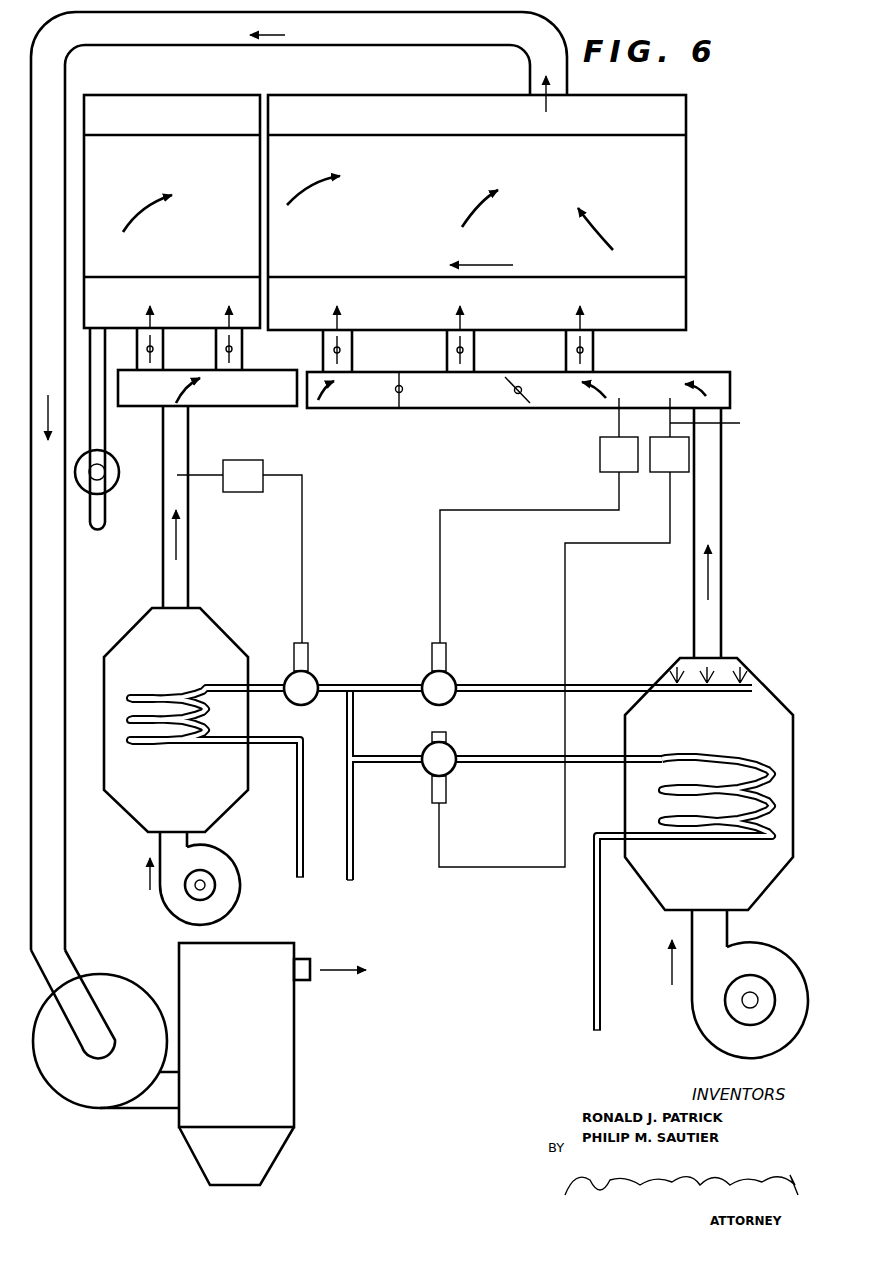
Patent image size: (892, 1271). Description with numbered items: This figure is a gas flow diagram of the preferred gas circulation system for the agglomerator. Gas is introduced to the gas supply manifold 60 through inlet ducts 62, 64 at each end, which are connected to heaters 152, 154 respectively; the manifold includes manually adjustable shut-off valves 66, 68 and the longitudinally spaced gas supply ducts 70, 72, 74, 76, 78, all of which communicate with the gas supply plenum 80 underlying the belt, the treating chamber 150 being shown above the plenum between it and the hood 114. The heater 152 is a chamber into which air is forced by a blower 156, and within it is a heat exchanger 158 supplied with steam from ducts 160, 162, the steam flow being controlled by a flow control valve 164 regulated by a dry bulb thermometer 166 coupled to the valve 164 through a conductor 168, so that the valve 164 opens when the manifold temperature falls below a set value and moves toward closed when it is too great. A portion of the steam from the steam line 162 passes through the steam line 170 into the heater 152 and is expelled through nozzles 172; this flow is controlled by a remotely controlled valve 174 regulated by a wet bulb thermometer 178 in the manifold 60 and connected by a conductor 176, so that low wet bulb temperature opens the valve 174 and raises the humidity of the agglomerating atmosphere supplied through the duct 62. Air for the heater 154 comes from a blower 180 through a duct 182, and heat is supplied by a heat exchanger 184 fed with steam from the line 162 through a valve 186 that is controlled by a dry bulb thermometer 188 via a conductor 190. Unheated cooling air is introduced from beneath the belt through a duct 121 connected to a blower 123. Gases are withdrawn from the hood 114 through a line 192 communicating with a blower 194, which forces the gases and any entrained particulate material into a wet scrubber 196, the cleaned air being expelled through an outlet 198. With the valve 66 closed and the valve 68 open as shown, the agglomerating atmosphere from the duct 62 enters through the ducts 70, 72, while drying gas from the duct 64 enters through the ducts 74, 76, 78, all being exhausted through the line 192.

The gas supply manifold 60 is at (700, 372).
The inlet duct 62 is at (721, 473).
The inlet duct 64 is at (188, 436).
The shut-off valve 66 is at (399, 408).
The shut-off valve 68 is at (522, 404).
The gas supply duct 70 is at (163, 362).
The gas supply duct 72 is at (242, 352).
The gas supply duct 74 is at (352, 348).
The gas supply duct 76 is at (474, 353).
The gas supply duct 78 is at (593, 352).
The gas supply plenum 80 is at (686, 316).
The hood 114 is at (686, 120).
The duct 121 is at (140, 423).
The blower 123 is at (105, 483).
The treating chamber 150 is at (686, 197).
The heater 152 is at (666, 673).
The heater 154 is at (130, 628).
The blower 156 is at (692, 1018).
The heat exchanger 158 is at (675, 842).
The steam duct 160 is at (523, 763).
The steam line 162 is at (354, 832).
The flow control valve 164 is at (439, 732).
The dry bulb thermometer 166 is at (740, 423).
The conductor 168 is at (545, 867).
The steam line 170 is at (547, 695).
The nozzles 172 is at (738, 668).
The remotely controlled valve 174 is at (456, 680).
The conductor 176 is at (440, 528).
The wet bulb thermometer 178 is at (612, 420).
The blower 180 is at (238, 905).
The duct 182 is at (157, 838).
The heat exchanger 184 is at (200, 684).
The valve 186 is at (316, 674).
The dry bulb thermometer 188 is at (217, 477).
The conductor 190 is at (302, 582).
The steam line 192 is at (522, 62).
The blower 194 is at (108, 1098).
The wet scrubber 196 is at (294, 1078).
The outlet 198 is at (303, 980).